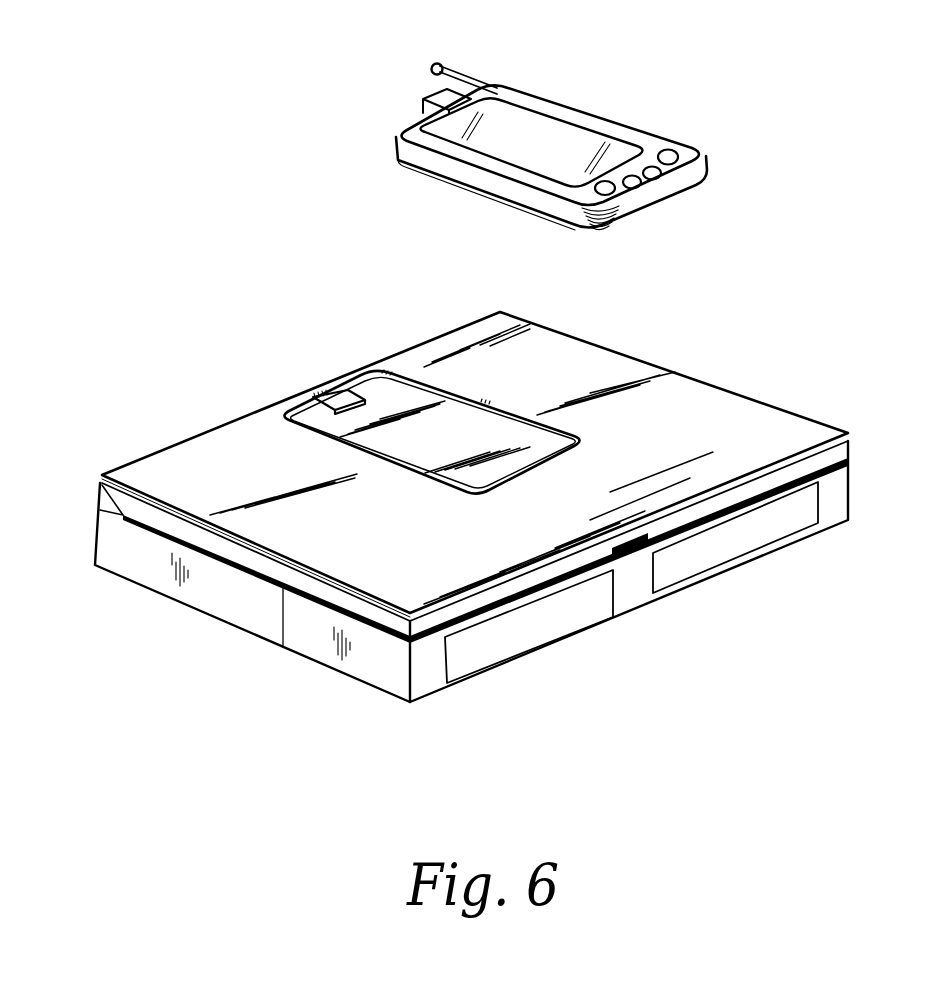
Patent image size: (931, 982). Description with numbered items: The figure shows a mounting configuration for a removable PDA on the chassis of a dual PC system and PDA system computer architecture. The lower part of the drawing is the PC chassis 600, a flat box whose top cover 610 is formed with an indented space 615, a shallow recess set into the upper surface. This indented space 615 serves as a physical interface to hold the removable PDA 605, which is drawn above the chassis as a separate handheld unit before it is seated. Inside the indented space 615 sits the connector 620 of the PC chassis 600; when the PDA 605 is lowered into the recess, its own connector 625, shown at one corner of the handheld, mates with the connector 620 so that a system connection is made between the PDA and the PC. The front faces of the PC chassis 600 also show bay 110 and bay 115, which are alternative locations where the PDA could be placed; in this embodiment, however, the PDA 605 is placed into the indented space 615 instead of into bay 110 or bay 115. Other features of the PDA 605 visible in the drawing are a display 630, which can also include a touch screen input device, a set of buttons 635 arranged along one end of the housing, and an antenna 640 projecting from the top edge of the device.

The removable PDA 605 is at (423, 160).
The display 630 is at (550, 120).
The buttons 635 is at (670, 150).
The connector 625 is at (440, 91).
The antenna 640 is at (467, 76).
The PC chassis 600 is at (143, 565).
The top cover 610 is at (217, 453).
The indented space 615 is at (407, 395).
The connector 620 is at (333, 397).
The bay 110 is at (537, 620).
The bay 115 is at (740, 538).